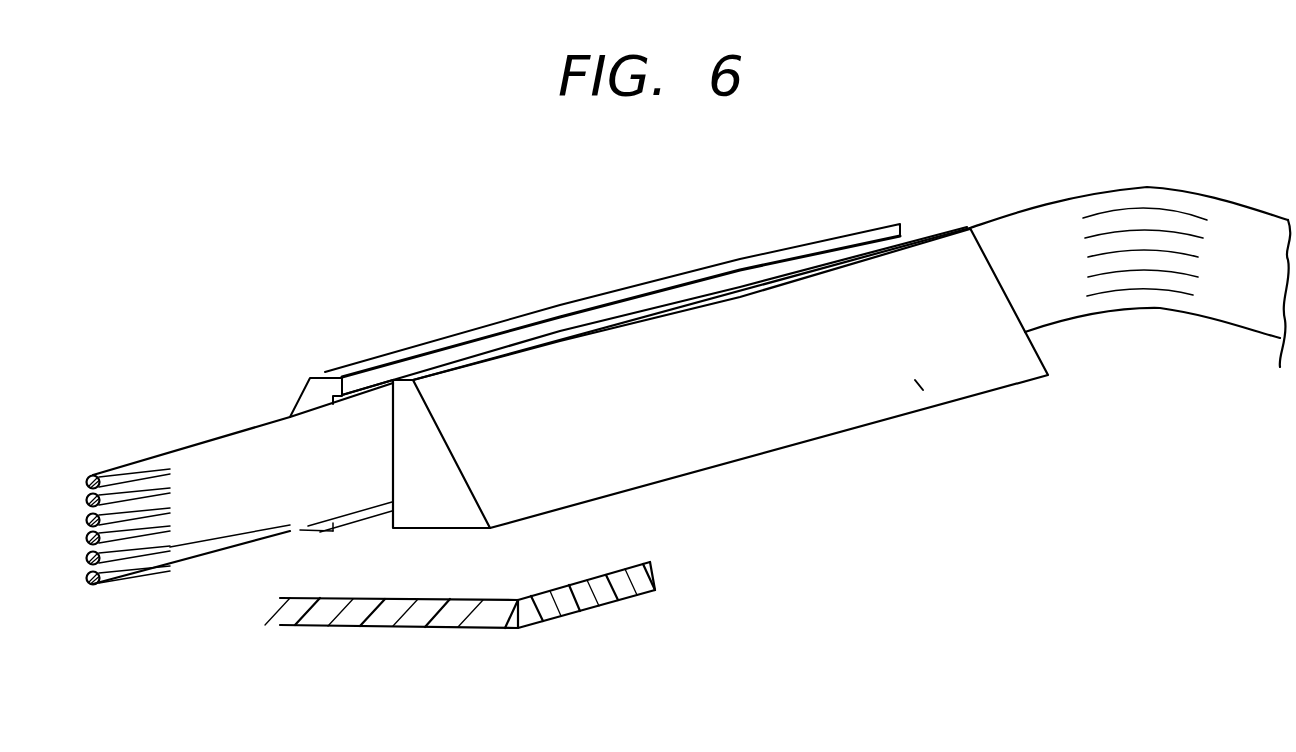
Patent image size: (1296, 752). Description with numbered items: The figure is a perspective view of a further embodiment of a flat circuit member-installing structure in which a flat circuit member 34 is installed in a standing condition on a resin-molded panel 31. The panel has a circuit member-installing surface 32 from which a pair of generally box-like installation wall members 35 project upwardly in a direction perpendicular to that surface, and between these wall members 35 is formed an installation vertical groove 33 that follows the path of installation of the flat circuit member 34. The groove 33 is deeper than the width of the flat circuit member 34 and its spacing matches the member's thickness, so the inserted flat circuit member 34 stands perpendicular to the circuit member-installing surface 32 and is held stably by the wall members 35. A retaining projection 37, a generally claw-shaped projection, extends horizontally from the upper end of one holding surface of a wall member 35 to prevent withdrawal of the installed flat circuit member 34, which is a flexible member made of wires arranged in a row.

The resin-molded panel 31 is at (756, 372).
The circuit member-installing surface 32 is at (510, 581).
The installation vertical groove 33 is at (391, 436).
The flat circuit member 34 is at (186, 446).
The installation wall member 35 is at (307, 398).
The retaining projection 37 is at (557, 324).